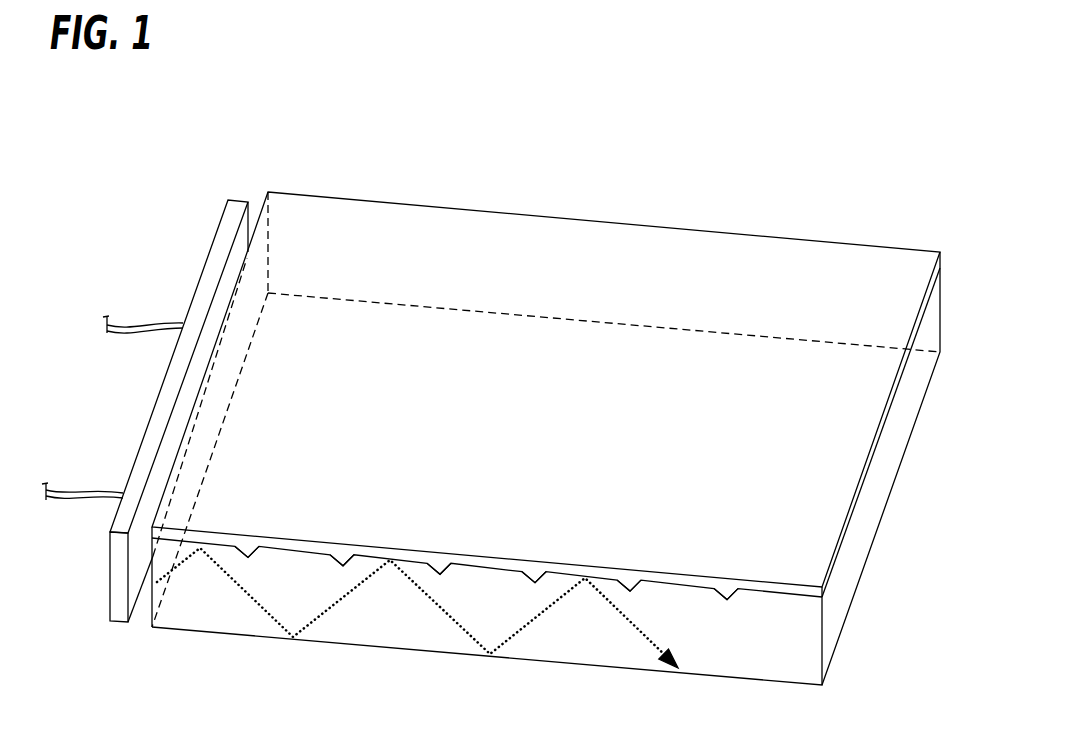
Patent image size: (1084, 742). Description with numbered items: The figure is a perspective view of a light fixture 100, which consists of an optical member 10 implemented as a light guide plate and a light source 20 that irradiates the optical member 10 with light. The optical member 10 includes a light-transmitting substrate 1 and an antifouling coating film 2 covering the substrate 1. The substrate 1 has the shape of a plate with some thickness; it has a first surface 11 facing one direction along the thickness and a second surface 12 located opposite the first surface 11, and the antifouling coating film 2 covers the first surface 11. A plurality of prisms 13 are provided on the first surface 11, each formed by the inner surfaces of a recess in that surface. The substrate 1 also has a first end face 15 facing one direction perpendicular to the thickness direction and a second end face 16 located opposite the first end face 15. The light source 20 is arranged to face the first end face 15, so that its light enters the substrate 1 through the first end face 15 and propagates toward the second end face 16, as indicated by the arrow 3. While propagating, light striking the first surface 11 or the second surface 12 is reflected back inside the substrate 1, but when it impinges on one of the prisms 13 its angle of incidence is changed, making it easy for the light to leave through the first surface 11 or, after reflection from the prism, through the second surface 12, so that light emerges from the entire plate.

The light fixture 100 is at (403, 119).
The optical member 10 is at (358, 197).
The substrate 1 is at (905, 450).
The antifouling coating film 2 is at (797, 270).
The arrow indicating light propagation 3 is at (552, 605).
The first surface 11 is at (775, 593).
The second surface 12 is at (740, 677).
The prisms 13 is at (248, 557).
The first end face 15 is at (148, 600).
The second end face 16 is at (867, 518).
The light source 20 is at (243, 197).